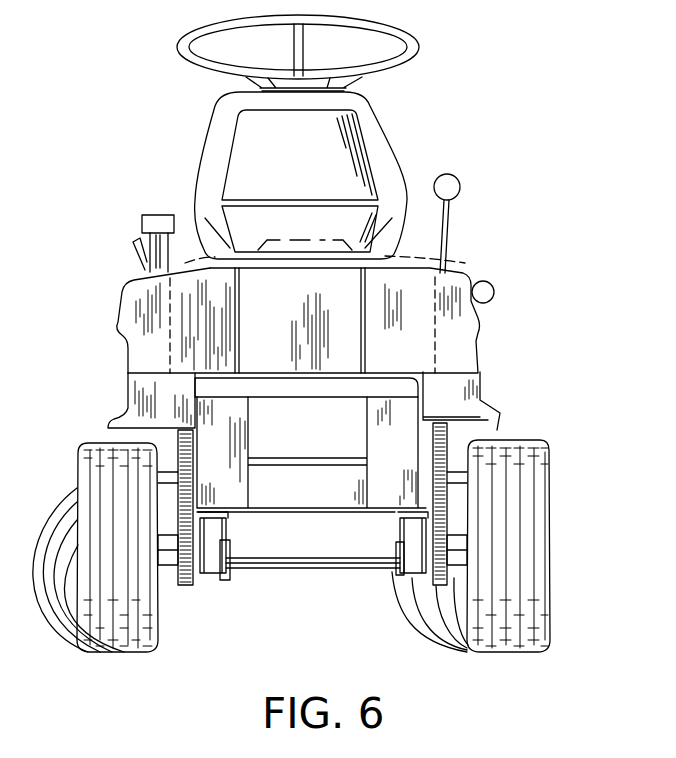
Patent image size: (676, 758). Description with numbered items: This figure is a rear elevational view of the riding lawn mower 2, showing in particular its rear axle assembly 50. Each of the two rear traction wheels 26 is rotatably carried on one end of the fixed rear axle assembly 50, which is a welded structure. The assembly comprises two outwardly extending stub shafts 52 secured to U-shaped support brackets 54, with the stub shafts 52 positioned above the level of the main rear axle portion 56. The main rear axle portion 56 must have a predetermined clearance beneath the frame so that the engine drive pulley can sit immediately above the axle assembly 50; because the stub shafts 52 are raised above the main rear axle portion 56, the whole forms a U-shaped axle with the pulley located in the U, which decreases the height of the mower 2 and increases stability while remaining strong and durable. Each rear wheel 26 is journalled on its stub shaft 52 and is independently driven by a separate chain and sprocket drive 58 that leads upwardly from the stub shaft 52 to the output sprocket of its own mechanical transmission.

The riding lawn mower 2 is at (303, 343).
The rear traction wheel 26 is at (526, 440).
The rear axle assembly 50 is at (306, 592).
The stub shaft 52 is at (215, 572).
The U-shaped support bracket 54 is at (223, 523).
The main rear axle portion 56 is at (356, 572).
The chain and sprocket drive 58 is at (447, 440).